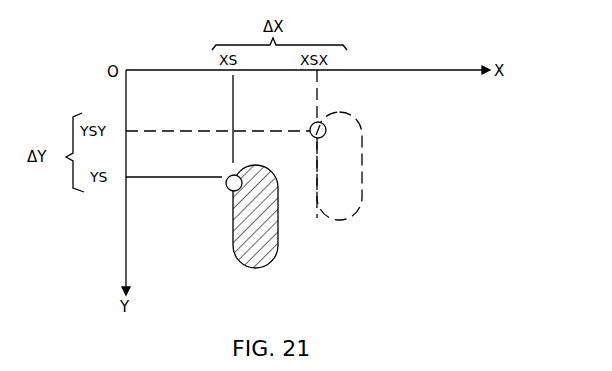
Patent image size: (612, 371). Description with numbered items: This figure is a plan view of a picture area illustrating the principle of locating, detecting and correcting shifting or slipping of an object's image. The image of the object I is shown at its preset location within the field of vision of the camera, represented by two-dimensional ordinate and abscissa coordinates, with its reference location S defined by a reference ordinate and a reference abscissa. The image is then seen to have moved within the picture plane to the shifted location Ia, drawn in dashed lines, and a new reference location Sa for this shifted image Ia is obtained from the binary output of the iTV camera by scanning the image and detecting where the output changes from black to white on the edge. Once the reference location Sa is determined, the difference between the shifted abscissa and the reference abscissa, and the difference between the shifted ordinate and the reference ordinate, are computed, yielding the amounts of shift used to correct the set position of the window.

The image of the object I is at (266, 269).
The shifted image location Ia is at (355, 215).
The reference location S is at (226, 186).
The reference location of shifted image Sa is at (310, 134).